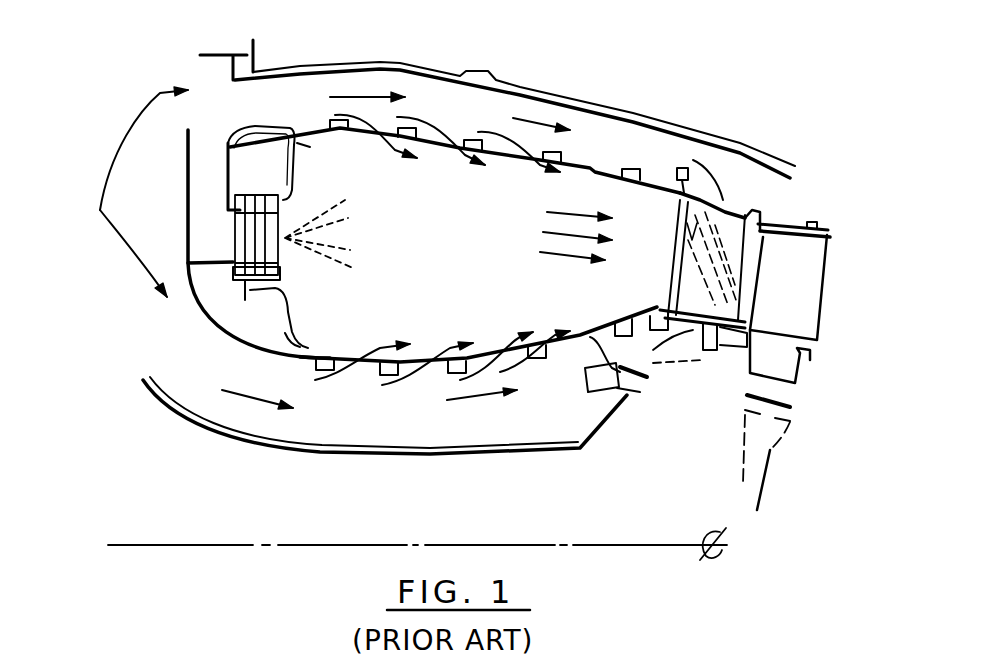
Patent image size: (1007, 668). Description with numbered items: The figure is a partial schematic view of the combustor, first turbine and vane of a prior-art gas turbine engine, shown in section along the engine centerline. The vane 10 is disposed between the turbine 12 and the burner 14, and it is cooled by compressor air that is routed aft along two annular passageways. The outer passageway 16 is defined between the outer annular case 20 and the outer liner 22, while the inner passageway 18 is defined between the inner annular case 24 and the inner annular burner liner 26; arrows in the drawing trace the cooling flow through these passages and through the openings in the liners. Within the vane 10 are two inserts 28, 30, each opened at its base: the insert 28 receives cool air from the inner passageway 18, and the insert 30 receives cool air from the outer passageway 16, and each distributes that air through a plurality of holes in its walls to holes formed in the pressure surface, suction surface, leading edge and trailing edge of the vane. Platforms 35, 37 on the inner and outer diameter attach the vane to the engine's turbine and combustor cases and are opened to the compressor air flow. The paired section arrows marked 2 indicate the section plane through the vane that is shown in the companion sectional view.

The vane 10 is at (742, 195).
The turbine 12 is at (827, 290).
The burner 14 is at (160, 331).
The passageway 16 is at (472, 122).
The passageway 18 is at (395, 428).
The outer annular case 20 is at (547, 97).
The outer liner 22 is at (577, 167).
The inner annular case 24 is at (480, 447).
The inner annular burner liner 26 is at (513, 355).
The insert 28 is at (670, 283).
The insert 30 is at (777, 218).
The platform 35 is at (703, 360).
The platform 37 is at (720, 207).
The section line for FIG. 2 is at (673, 247).